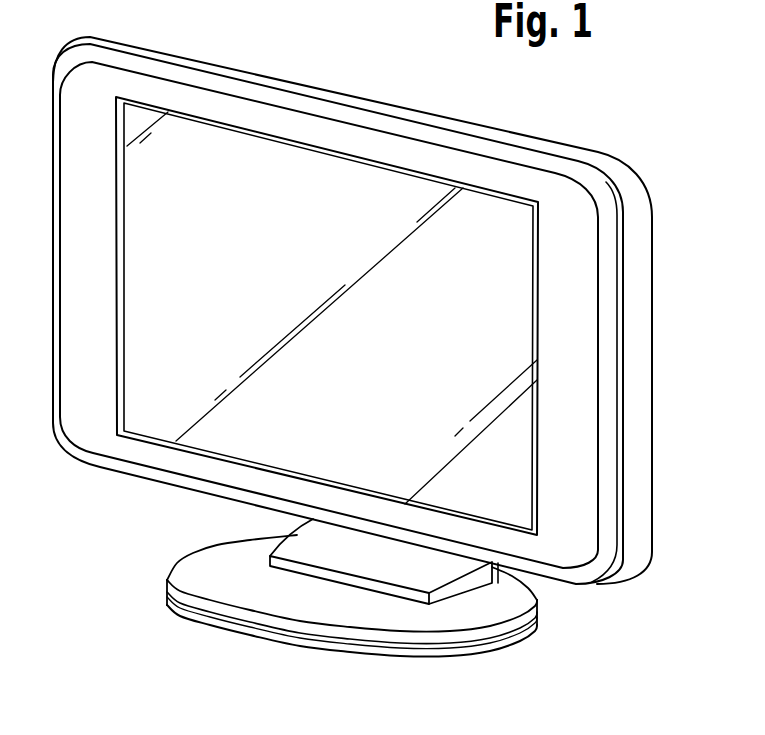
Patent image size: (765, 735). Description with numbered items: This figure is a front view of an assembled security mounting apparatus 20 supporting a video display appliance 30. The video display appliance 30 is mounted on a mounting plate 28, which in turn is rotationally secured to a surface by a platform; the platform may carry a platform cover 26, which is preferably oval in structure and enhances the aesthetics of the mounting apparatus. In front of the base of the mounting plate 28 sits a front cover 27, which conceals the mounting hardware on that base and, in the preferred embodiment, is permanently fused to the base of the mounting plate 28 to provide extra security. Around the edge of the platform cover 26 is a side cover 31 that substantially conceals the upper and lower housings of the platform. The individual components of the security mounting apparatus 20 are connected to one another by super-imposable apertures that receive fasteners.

The security mounting apparatus 20 is at (600, 140).
The platform cover 26 is at (288, 595).
The front cover 27 is at (372, 565).
The mounting plate 28 is at (498, 565).
The video display appliance 30 is at (355, 118).
The side cover 31 is at (383, 638).